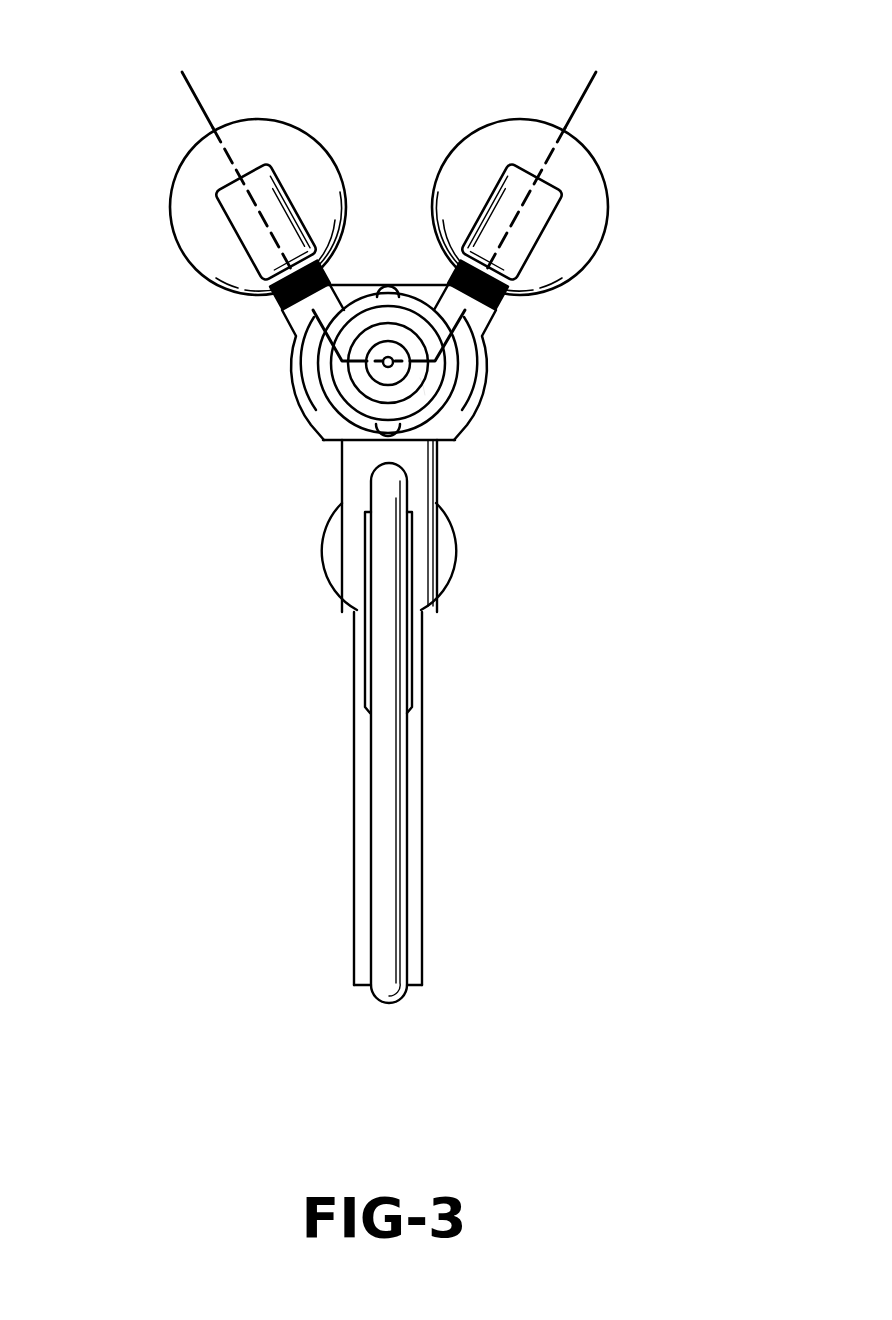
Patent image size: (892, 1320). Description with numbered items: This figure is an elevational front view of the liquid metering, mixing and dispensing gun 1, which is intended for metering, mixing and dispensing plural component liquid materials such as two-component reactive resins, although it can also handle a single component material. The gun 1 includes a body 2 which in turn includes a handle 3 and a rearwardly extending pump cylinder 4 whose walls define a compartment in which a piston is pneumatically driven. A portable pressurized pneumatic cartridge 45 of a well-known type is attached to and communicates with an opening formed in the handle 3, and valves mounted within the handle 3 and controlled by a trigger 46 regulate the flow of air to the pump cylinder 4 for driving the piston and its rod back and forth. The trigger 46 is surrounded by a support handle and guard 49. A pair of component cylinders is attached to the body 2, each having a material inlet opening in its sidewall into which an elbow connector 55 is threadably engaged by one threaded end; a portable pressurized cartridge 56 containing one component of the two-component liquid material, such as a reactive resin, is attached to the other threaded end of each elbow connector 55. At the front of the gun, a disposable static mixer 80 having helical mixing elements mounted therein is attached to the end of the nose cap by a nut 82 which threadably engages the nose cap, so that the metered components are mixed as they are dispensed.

The liquid metering, mixing and dispensing gun 1 is at (388, 522).
The body 2 is at (387, 410).
The handle 3 is at (378, 721).
The pump cylinder 4 is at (182, 72).
The portable pressurized pneumatic cartridge 45 is at (323, 558).
The trigger 46 is at (412, 670).
The support handle and guard 49 is at (372, 885).
The elbow connector 55 is at (478, 211).
The portable pressurized cartridge 56 is at (262, 118).
The disposable static mixer 80 is at (383, 366).
The nut 82 is at (415, 380).